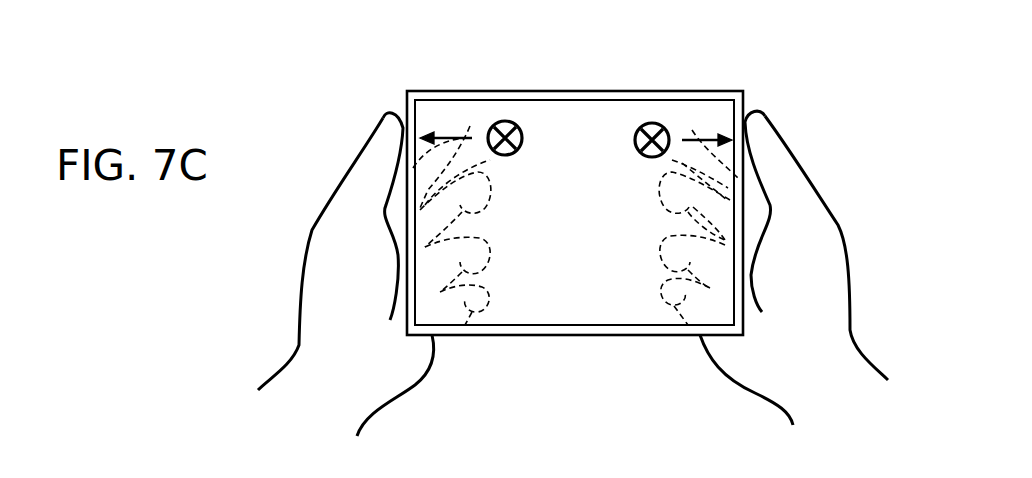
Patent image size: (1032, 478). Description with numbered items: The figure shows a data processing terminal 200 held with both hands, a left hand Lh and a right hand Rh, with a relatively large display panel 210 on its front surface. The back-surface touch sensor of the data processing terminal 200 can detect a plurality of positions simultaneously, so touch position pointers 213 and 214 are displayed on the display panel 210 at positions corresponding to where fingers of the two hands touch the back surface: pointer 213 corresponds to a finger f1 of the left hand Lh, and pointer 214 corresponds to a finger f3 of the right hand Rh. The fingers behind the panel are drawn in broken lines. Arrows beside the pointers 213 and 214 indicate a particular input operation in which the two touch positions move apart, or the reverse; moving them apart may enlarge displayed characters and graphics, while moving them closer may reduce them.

The data processing terminal 200 is at (620, 337).
The display panel 210 is at (533, 313).
The touch position pointer 213 is at (523, 136).
The touch position pointer 214 is at (636, 152).
The left hand Lh is at (308, 325).
The right hand Rh is at (843, 318).
The first finger f1 is at (470, 125).
The finger of right hand f3 is at (690, 128).